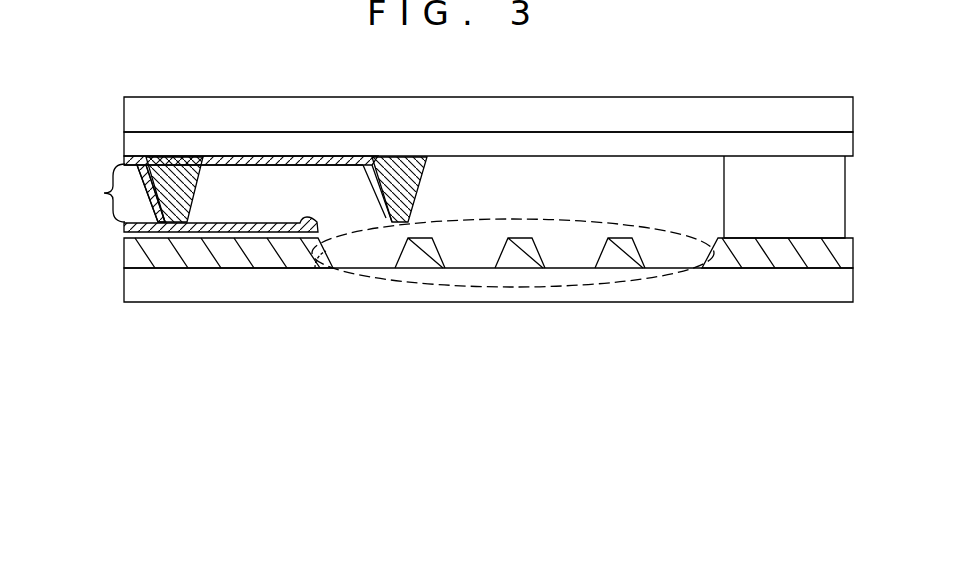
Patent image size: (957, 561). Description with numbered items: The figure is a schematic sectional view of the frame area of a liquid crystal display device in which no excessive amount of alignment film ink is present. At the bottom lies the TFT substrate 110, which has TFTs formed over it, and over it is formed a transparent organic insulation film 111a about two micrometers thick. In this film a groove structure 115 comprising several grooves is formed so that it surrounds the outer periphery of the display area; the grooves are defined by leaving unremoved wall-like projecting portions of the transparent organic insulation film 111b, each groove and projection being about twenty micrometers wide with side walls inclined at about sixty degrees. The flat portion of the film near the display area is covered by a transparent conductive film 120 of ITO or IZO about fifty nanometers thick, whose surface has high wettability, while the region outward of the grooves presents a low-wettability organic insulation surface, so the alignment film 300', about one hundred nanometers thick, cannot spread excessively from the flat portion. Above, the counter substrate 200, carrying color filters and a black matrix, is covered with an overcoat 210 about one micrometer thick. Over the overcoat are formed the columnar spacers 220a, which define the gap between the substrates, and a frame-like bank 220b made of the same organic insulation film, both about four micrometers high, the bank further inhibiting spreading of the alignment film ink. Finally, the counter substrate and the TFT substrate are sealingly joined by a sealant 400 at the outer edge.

The counter substrate 200 is at (132, 118).
The overcoat 210 is at (132, 147).
The columnar spacers 220a is at (173, 160).
The bank 220b is at (397, 155).
The alignment film 300' is at (84, 193).
The transparent conductive film 120 is at (126, 237).
The transparent organic insulation film 111a is at (137, 253).
The TFT substrate 110 is at (135, 287).
The wall-like portions of the transparent organic insulation film 111b is at (622, 247).
The groove structure 115 is at (549, 219).
The sealant 400 is at (783, 185).